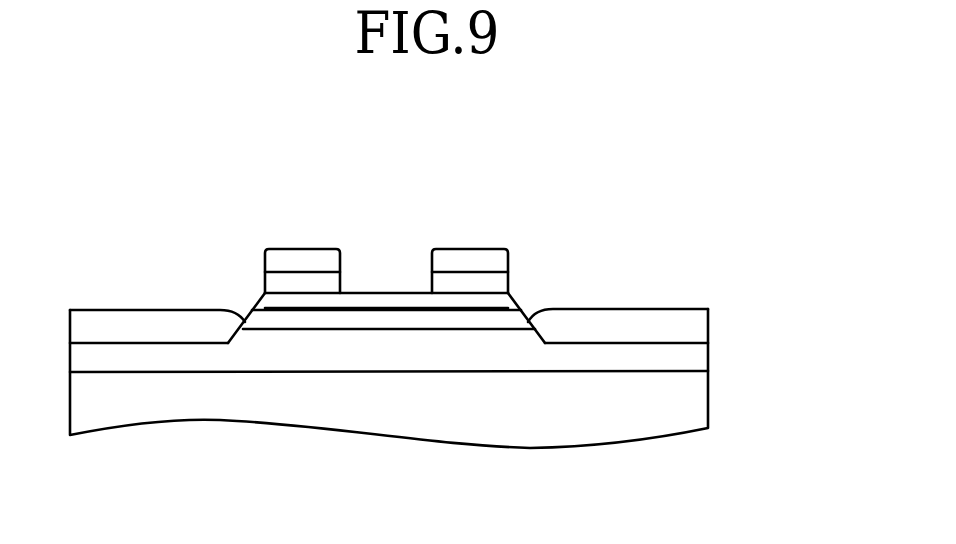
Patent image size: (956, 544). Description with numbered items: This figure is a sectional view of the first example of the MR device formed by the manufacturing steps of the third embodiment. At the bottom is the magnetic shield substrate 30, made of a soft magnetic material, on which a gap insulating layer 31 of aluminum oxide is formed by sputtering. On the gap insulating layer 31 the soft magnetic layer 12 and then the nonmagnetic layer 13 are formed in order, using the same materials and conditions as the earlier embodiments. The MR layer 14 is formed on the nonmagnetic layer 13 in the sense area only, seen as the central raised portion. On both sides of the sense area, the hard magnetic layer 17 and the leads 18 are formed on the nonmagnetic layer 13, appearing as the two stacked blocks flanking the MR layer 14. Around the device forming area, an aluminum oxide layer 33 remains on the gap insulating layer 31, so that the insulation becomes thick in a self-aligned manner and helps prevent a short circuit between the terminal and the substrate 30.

The soft magnetic layer 12 is at (302, 317).
The nonmagnetic layer 13 is at (422, 300).
The MR layer 14 is at (380, 283).
The hard magnetic layer 17 is at (495, 282).
The leads 18 is at (465, 260).
The magnetic shield substrate 30 is at (677, 410).
The gap insulating layer 31 is at (685, 360).
The Al2O3 layer 33 is at (663, 328).